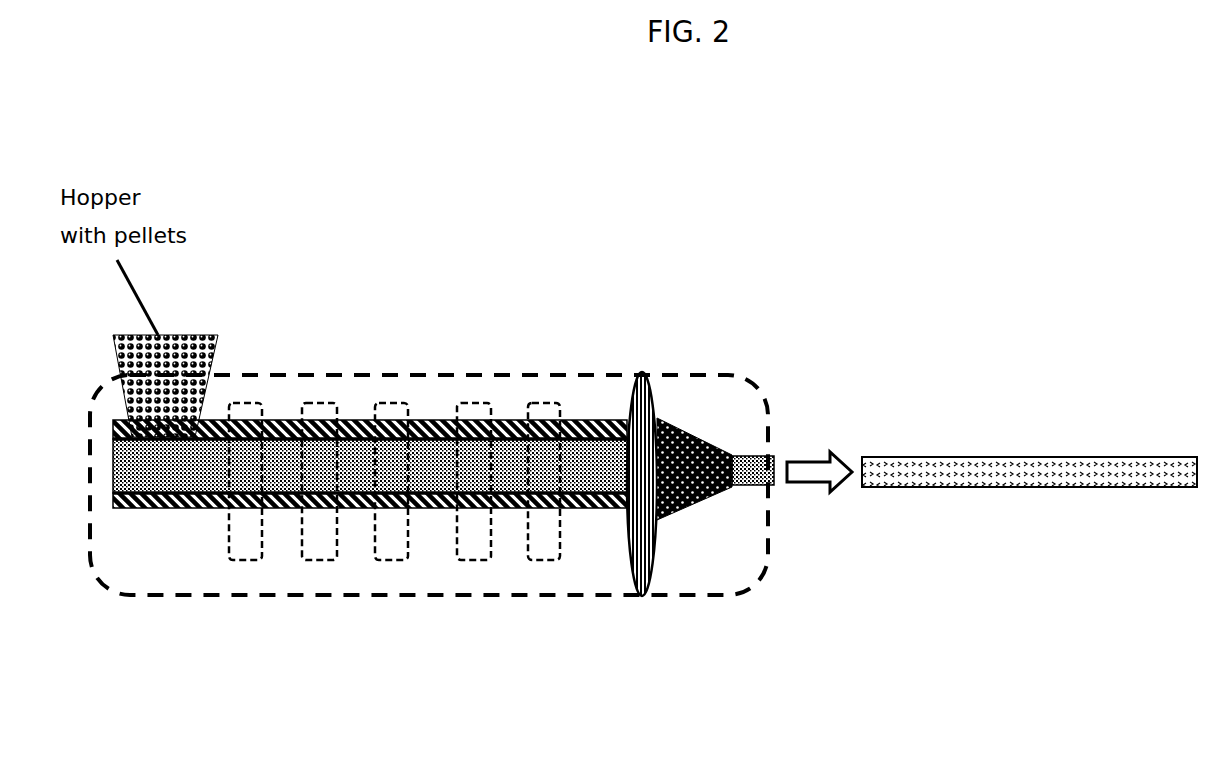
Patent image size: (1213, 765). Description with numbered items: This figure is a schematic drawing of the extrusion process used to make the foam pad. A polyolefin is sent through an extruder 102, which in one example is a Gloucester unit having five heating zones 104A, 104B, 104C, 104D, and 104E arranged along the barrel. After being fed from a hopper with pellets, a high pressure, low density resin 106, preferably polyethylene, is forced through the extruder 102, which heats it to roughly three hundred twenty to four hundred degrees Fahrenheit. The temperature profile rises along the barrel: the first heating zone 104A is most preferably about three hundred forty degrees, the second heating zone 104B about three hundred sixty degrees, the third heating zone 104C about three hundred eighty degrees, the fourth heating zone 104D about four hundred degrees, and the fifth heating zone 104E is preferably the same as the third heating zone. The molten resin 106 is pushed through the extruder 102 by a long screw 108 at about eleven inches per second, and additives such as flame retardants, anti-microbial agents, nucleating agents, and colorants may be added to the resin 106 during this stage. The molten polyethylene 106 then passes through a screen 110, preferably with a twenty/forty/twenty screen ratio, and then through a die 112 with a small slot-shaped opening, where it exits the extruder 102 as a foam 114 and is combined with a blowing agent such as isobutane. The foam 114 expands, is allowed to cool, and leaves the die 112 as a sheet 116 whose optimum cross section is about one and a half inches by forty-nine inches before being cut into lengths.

The extruder 102 is at (537, 375).
The first heating zone 104A is at (243, 402).
The second heating zone 104B is at (318, 560).
The third heating zone 104C is at (395, 402).
The fourth heating zone 104D is at (465, 560).
The fifth heating zone 104E is at (545, 562).
The resin 106 is at (158, 467).
The long screw 108 is at (192, 505).
The screen 110 is at (642, 520).
The die 112 is at (695, 500).
The foam 114 is at (763, 460).
The sheet 116 is at (982, 422).